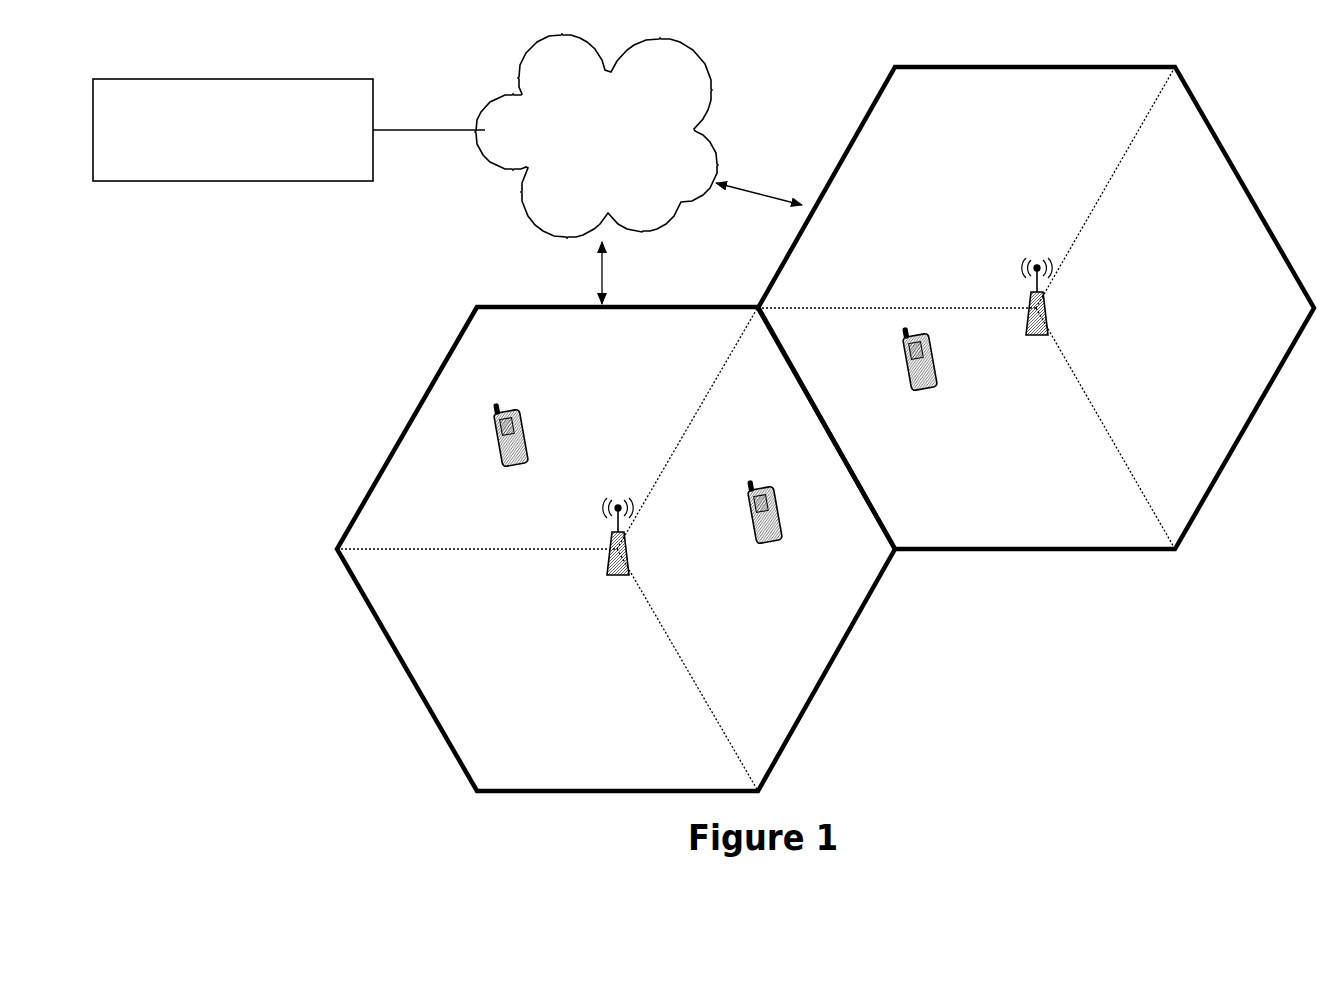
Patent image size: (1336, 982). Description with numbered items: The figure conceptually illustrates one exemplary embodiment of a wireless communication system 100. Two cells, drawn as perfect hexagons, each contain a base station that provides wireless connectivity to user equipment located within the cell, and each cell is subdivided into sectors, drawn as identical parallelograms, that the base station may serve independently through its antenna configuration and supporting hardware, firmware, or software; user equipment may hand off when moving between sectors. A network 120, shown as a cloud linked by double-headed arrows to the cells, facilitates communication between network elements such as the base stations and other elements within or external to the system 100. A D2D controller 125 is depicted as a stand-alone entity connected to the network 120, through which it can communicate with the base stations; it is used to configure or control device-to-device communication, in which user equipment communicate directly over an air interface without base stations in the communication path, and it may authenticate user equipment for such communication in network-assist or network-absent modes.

The wireless communication system 100 is at (1270, 100).
The network 120 is at (585, 150).
The D2D controller 125 is at (234, 158).